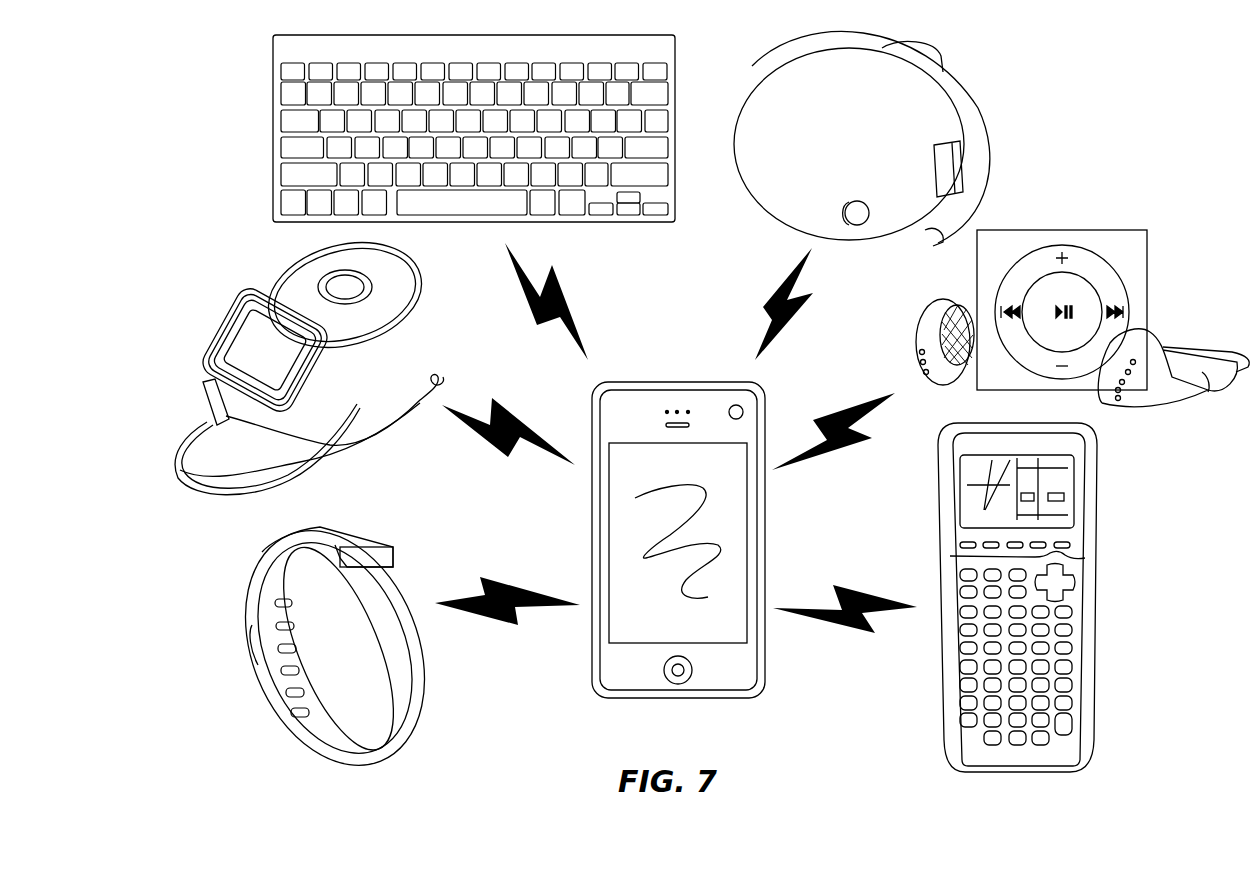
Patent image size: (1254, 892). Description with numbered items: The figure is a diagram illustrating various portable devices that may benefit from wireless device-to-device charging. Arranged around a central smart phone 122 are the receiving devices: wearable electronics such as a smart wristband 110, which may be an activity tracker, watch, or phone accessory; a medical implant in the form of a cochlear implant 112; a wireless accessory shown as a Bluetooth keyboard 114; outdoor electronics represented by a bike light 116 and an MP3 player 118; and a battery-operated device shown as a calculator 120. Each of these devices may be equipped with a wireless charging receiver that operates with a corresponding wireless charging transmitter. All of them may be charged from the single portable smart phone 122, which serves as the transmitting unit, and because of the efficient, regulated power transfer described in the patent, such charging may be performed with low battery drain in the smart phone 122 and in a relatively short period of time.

The smart wristband 110 is at (280, 550).
The cochlear implant 112 is at (215, 332).
The Bluetooth keyboard 114 is at (677, 80).
The bike light 116 is at (970, 108).
The MP3 player 118 is at (1147, 265).
The calculator 120 is at (1097, 525).
The smart phone 122 is at (654, 382).